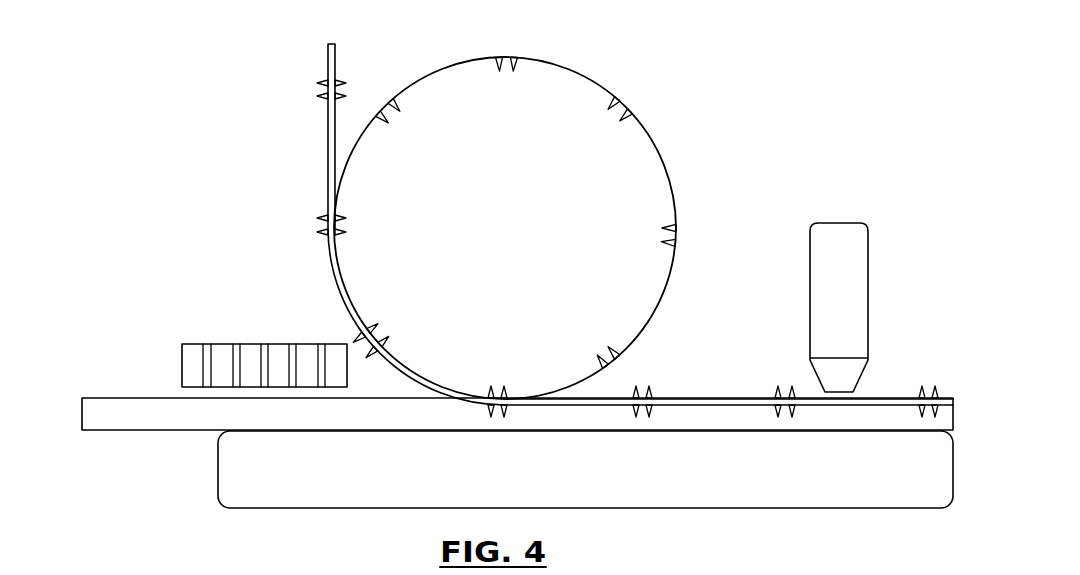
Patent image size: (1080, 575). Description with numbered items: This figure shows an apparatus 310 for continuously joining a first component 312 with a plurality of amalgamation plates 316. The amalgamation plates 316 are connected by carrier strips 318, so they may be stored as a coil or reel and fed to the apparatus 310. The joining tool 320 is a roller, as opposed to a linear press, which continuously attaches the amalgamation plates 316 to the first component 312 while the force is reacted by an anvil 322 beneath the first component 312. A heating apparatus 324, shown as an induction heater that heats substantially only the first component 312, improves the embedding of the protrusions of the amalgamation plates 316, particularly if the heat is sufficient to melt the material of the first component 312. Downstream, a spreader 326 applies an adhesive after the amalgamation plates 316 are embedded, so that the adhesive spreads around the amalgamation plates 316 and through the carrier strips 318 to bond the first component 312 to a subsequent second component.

The apparatus 310 is at (905, 131).
The first component 312 is at (132, 407).
The amalgamation plates 316 is at (322, 228).
The carrier strips 318 is at (330, 144).
The joining tool 320 is at (638, 172).
The anvil 322 is at (238, 465).
The heating apparatus 324 is at (245, 343).
The spreader 326 is at (868, 300).